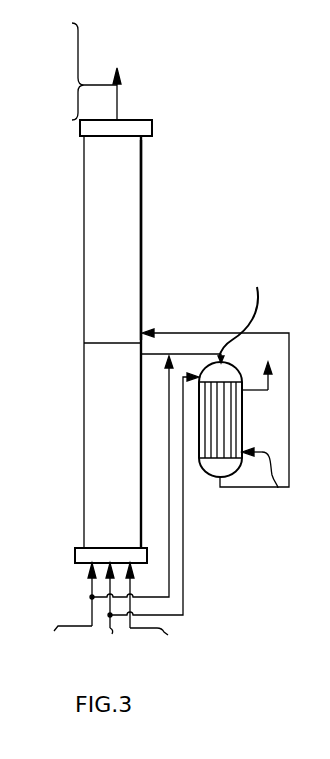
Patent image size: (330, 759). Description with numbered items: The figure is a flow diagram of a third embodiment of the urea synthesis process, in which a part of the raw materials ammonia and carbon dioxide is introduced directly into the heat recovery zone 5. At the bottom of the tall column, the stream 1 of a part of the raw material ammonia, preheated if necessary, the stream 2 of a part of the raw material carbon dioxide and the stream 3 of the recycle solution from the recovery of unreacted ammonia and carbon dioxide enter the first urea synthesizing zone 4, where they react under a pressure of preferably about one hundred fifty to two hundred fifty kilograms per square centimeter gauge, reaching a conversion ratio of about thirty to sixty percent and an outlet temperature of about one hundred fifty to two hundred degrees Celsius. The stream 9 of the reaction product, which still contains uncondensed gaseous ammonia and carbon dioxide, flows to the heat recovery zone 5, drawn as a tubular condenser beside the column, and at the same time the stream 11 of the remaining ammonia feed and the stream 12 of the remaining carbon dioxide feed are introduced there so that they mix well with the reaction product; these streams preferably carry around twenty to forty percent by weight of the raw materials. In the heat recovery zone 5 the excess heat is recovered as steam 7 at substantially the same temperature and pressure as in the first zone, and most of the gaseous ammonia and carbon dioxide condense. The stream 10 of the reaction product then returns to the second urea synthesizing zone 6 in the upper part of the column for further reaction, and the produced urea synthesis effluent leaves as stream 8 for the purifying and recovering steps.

The stream of raw material ammonia 1 is at (86, 588).
The stream of raw material carbon dioxide 2 is at (108, 618).
The stream of recycle solution 3 is at (137, 631).
The first urea synthesizing zone 4 is at (82, 500).
The heat recovery zone 5 is at (242, 428).
The second urea synthesizing zone 6 is at (141, 222).
The steam 7 is at (267, 462).
The stream of urea synthesis effluent 8 is at (117, 110).
The stream of reaction product 9 is at (189, 353).
The stream of reaction product from heat recovery zone 10 is at (297, 394).
The stream of remaining ammonia feed 11 is at (168, 500).
The stream of remaining carbon dioxide feed 12 is at (184, 535).